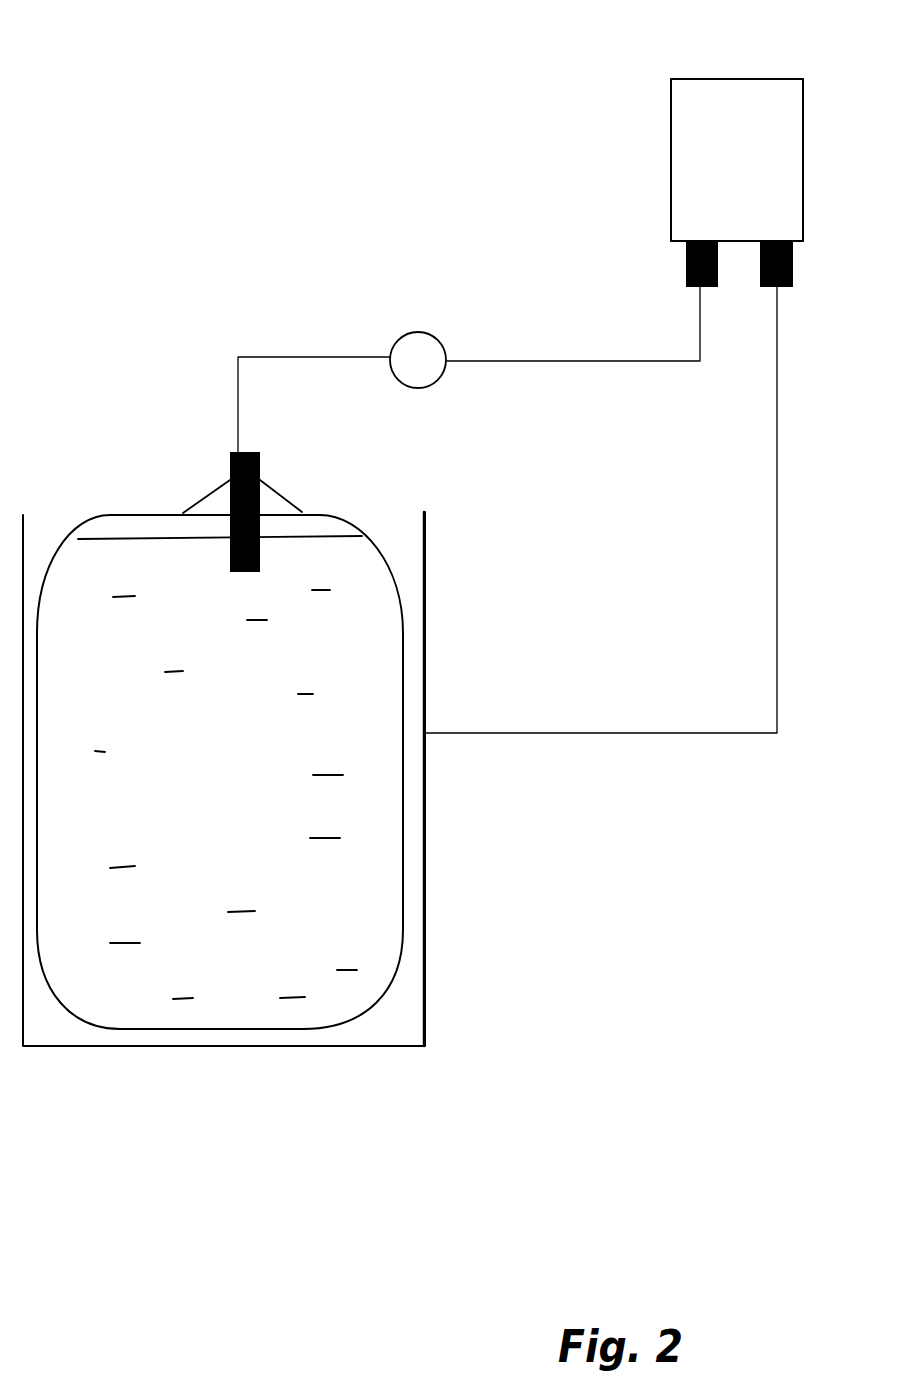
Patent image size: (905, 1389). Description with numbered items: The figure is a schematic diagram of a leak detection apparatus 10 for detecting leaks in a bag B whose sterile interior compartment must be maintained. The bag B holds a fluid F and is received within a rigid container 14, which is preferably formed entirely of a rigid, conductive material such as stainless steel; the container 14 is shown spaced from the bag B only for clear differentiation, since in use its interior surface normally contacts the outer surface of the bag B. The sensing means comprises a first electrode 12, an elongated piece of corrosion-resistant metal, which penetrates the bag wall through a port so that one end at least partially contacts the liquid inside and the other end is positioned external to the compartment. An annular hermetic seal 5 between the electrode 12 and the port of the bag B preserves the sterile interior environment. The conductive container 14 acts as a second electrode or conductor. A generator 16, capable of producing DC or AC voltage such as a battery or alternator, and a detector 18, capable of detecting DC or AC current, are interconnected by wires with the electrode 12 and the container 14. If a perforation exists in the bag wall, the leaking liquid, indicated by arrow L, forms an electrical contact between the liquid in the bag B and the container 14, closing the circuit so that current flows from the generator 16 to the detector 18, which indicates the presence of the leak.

The apparatus 10 is at (127, 321).
The electrode 12 is at (230, 460).
The rigid container 14 is at (427, 910).
The generator 16 is at (738, 80).
The detector 18 is at (418, 332).
The bag B is at (110, 515).
The hermetic seal 5 is at (280, 497).
The fluid F is at (245, 800).
The leaking liquid L is at (386, 1036).